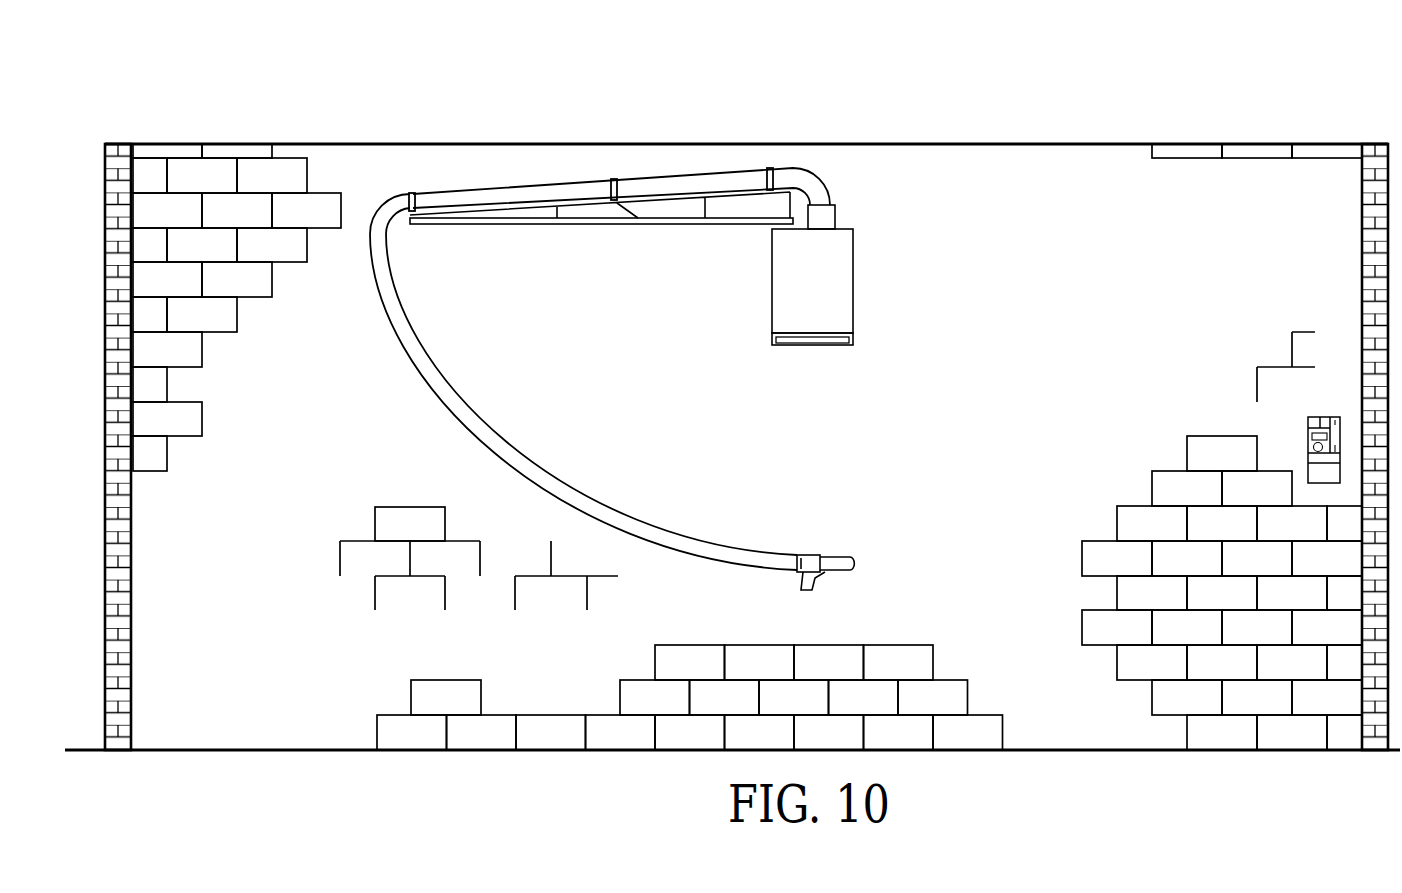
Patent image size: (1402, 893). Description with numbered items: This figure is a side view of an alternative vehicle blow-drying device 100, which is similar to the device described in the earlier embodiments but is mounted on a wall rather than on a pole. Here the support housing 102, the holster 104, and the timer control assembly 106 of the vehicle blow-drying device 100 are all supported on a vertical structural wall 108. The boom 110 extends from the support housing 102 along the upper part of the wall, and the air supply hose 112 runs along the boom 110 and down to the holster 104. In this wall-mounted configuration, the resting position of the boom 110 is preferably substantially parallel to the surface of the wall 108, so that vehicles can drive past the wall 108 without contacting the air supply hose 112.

The vehicle blow-drying device 100 is at (903, 96).
The support housing 102 is at (853, 281).
The holster 104 is at (825, 578).
The timer control assembly 106 is at (1312, 417).
The vertical structural wall 108 is at (1094, 336).
The boom 110 is at (602, 225).
The air supply hose 112 is at (517, 447).